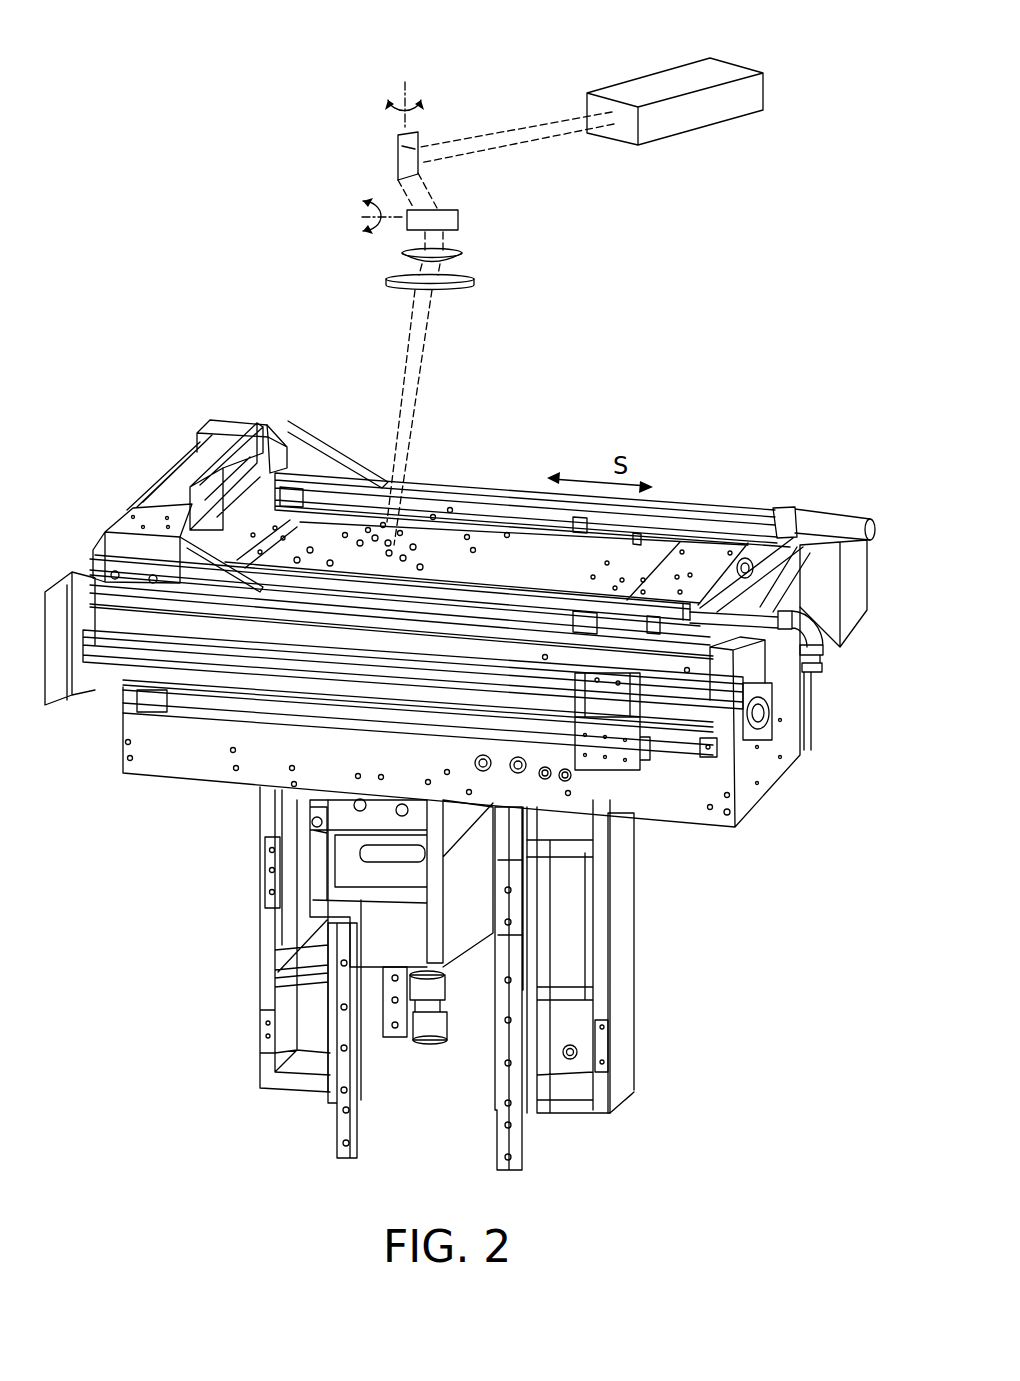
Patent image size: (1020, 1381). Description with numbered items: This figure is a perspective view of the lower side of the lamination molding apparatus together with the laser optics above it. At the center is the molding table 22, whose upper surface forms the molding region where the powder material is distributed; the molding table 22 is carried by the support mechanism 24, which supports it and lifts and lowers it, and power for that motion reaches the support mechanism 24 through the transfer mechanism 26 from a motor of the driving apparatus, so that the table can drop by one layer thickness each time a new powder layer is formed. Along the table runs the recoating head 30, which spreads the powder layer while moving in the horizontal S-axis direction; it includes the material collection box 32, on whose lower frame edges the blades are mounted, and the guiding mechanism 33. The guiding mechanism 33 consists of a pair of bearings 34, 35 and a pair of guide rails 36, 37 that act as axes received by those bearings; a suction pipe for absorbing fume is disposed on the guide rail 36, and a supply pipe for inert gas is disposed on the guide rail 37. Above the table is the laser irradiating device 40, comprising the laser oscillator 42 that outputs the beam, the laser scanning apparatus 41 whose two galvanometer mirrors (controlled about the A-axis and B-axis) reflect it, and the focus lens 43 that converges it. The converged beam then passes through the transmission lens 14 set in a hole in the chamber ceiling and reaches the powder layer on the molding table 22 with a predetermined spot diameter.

The transmission lens 14 is at (485, 283).
The molding table 22 is at (440, 510).
The support mechanism 24 is at (640, 962).
The transfer mechanism 26 is at (460, 1028).
The recoating head 30 is at (213, 427).
The material collection box 32 is at (222, 505).
The guiding mechanism 33 is at (303, 466).
The bearing 34 is at (307, 465).
The bearing 35 is at (220, 520).
The guide rail 36 is at (702, 508).
The guide rail 37 is at (478, 593).
The laser irradiating device 40 is at (475, 77).
The laser scanning apparatus 41 is at (405, 182).
The laser oscillator 42 is at (720, 122).
The focus lens 43 is at (472, 257).